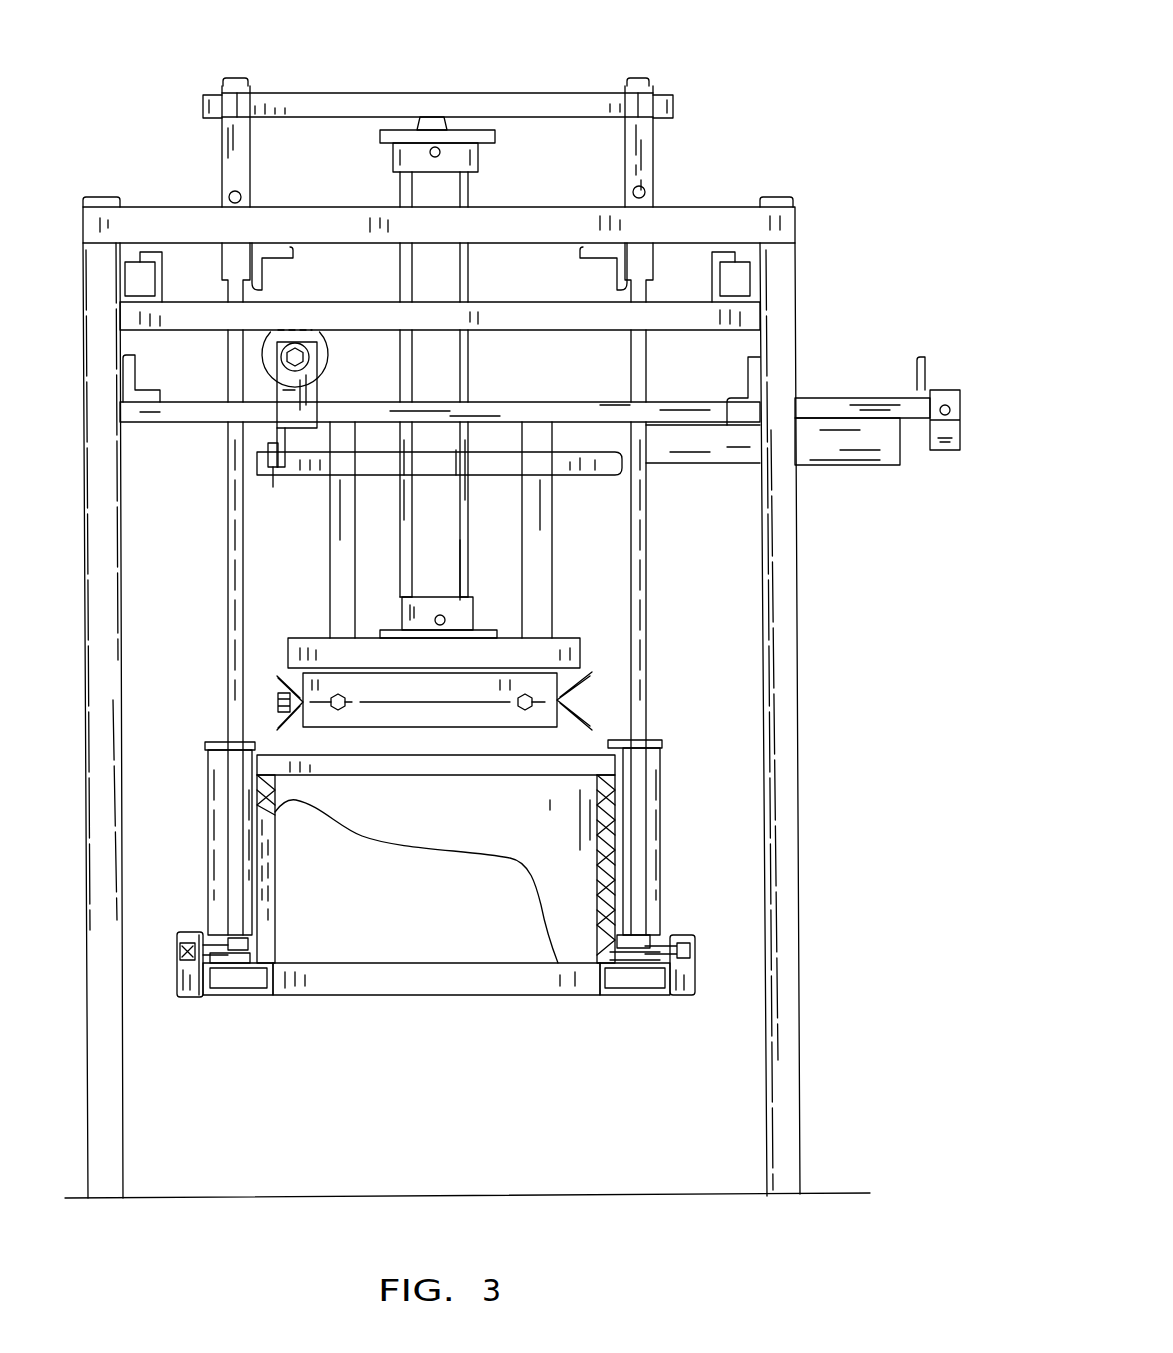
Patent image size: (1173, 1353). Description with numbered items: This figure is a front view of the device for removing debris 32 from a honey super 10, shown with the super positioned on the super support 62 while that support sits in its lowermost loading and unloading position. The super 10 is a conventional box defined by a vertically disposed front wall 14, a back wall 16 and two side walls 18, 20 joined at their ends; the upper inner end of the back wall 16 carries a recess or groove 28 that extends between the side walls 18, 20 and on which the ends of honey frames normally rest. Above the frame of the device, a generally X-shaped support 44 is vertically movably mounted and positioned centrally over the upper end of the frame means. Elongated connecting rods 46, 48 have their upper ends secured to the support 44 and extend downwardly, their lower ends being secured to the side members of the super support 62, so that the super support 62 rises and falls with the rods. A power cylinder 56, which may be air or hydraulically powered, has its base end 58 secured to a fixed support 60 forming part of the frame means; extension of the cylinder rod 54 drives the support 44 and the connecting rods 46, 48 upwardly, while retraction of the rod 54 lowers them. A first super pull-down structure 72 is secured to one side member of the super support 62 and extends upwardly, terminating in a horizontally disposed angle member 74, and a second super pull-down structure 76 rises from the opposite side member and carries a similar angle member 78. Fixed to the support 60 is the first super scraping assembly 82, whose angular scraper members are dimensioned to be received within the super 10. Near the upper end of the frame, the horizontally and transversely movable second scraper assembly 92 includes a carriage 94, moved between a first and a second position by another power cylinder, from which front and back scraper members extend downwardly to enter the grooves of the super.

The honey super 10 is at (565, 830).
The front wall 14 is at (394, 918).
The back wall 16 is at (452, 824).
The side wall 18 is at (258, 792).
The side wall 20 is at (605, 862).
The recess or groove 28 is at (572, 755).
The device for removing debris 32 is at (704, 174).
The X-shaped support 44 is at (515, 88).
The connecting rod 46 is at (228, 580).
The connecting rod 48 is at (645, 597).
The cylinder rod 54 is at (410, 122).
The power cylinder 56 is at (445, 527).
The base end 58 is at (450, 628).
The support 60 is at (575, 655).
The super support 62 is at (480, 1004).
The first super pull-down structure 72 is at (216, 827).
The angle member 74 is at (255, 745).
The second super pull-down structure 76 is at (643, 915).
The angle member 78 is at (615, 746).
The first super scraping assembly 82 is at (587, 692).
The second scraper assembly 92 is at (852, 393).
The carriage 94 is at (325, 390).